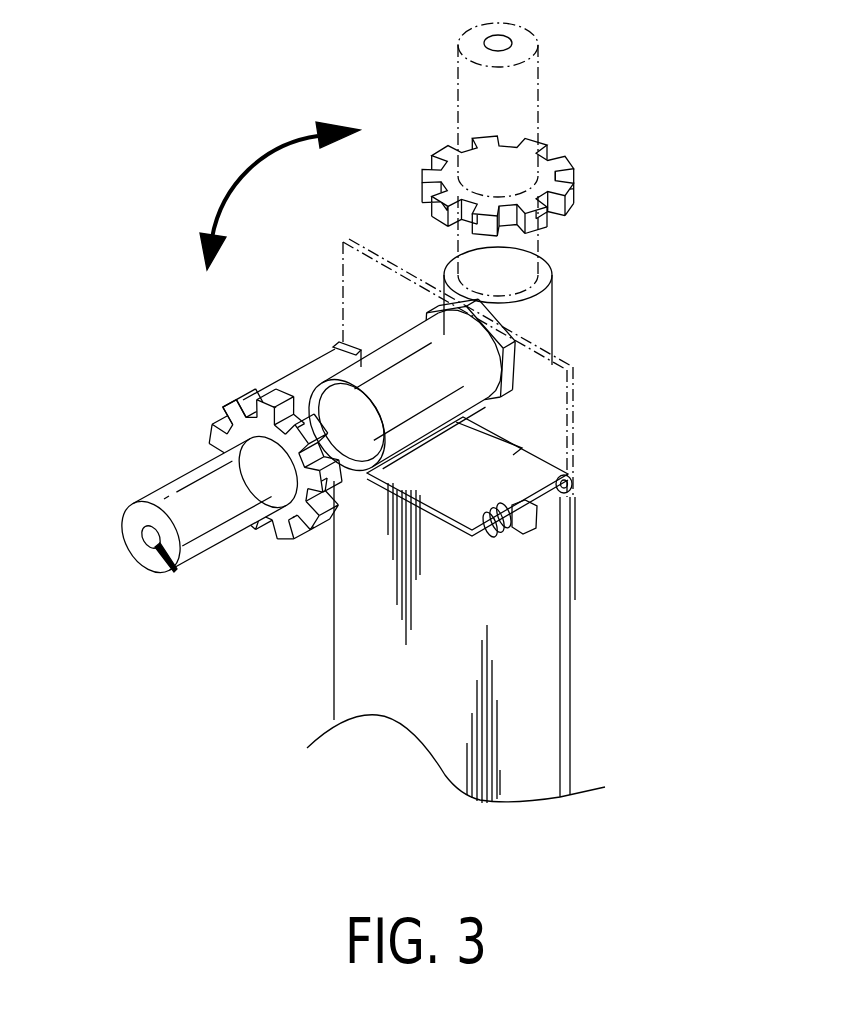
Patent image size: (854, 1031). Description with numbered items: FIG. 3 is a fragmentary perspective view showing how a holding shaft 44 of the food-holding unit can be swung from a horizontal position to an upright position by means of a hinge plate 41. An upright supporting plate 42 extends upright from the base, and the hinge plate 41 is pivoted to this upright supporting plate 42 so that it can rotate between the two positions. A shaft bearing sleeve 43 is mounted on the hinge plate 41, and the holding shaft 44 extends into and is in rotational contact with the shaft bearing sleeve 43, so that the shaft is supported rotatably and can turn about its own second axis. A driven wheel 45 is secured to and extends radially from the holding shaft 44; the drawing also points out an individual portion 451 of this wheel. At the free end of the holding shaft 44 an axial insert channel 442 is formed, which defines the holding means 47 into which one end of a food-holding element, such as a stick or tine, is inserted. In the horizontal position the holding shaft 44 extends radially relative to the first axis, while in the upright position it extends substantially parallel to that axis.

The hinge plate 41 is at (513, 478).
The upright supporting plate 42 is at (510, 633).
The shaft bearing sleeve 43 is at (338, 365).
The holding shaft 44 is at (199, 542).
The axial insert channel 442 is at (143, 548).
The driven wheel 45 is at (205, 405).
The gear tooth 451 is at (233, 408).
The holding means 47 is at (172, 569).